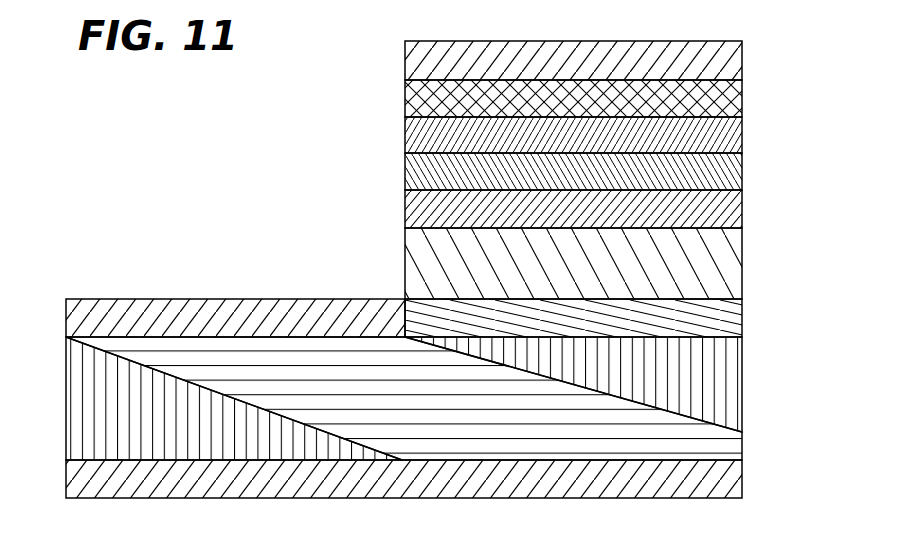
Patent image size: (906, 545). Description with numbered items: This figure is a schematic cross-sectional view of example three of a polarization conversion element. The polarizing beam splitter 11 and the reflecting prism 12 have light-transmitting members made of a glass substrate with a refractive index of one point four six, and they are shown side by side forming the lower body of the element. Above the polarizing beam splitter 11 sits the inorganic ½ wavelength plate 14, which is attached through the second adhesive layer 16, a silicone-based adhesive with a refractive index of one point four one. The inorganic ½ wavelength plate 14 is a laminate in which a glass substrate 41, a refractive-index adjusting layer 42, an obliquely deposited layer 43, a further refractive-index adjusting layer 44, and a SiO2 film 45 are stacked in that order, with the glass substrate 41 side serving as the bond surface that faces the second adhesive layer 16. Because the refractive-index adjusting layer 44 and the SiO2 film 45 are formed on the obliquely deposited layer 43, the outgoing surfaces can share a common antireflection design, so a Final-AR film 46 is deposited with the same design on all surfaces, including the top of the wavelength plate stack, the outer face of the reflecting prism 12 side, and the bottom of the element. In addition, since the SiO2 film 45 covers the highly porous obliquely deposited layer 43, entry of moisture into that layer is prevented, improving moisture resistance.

The polarizing beam splitter 11 is at (725, 450).
The reflecting prism 12 is at (728, 390).
The inorganic ½ wavelength plate 14 is at (619, 191).
The second adhesive layer 16 is at (733, 325).
The glass substrate 41 is at (595, 263).
The refractive-index adjusting layer 42 is at (730, 213).
The obliquely deposited layer 43 is at (728, 176).
The refractive-index adjusting layer 44 is at (728, 138).
The SiO2 film 45 is at (733, 100).
The Final-AR film 46 is at (733, 62).